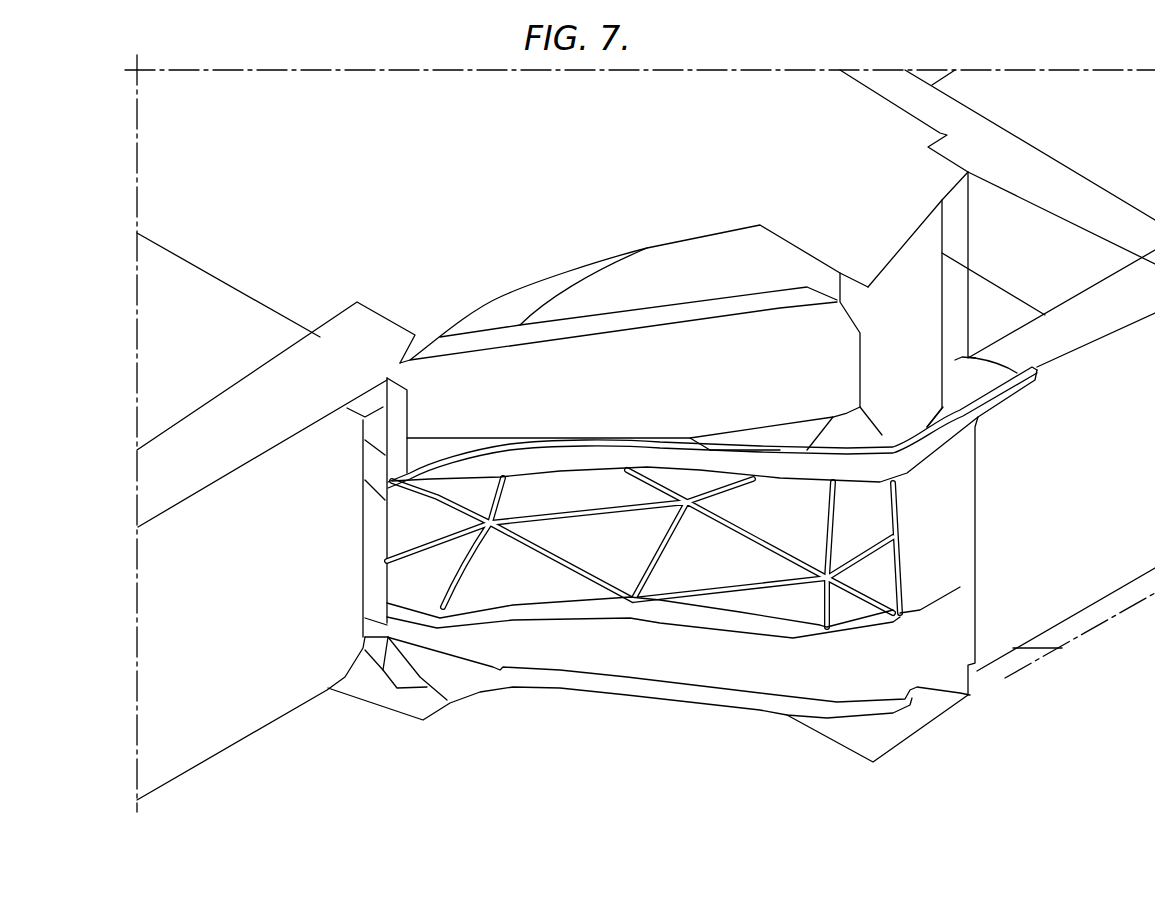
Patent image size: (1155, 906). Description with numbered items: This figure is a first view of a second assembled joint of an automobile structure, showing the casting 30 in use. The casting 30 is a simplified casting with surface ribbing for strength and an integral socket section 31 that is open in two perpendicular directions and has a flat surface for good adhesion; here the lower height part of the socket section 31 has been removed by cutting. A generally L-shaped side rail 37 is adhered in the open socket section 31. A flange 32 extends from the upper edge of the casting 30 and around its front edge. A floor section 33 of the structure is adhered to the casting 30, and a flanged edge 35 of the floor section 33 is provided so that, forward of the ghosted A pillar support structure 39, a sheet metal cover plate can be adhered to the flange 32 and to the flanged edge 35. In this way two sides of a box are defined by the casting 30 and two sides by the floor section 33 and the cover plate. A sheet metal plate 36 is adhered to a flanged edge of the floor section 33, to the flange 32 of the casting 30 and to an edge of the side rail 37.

The casting 30 is at (512, 607).
The socket section 31 is at (918, 614).
The flange 32 is at (423, 473).
The floor section 33 is at (627, 657).
The flanged edge 35 is at (553, 678).
The sheet metal plate 36 is at (1003, 640).
The side rail 37 is at (1028, 347).
The A pillar support structure 39 is at (877, 743).